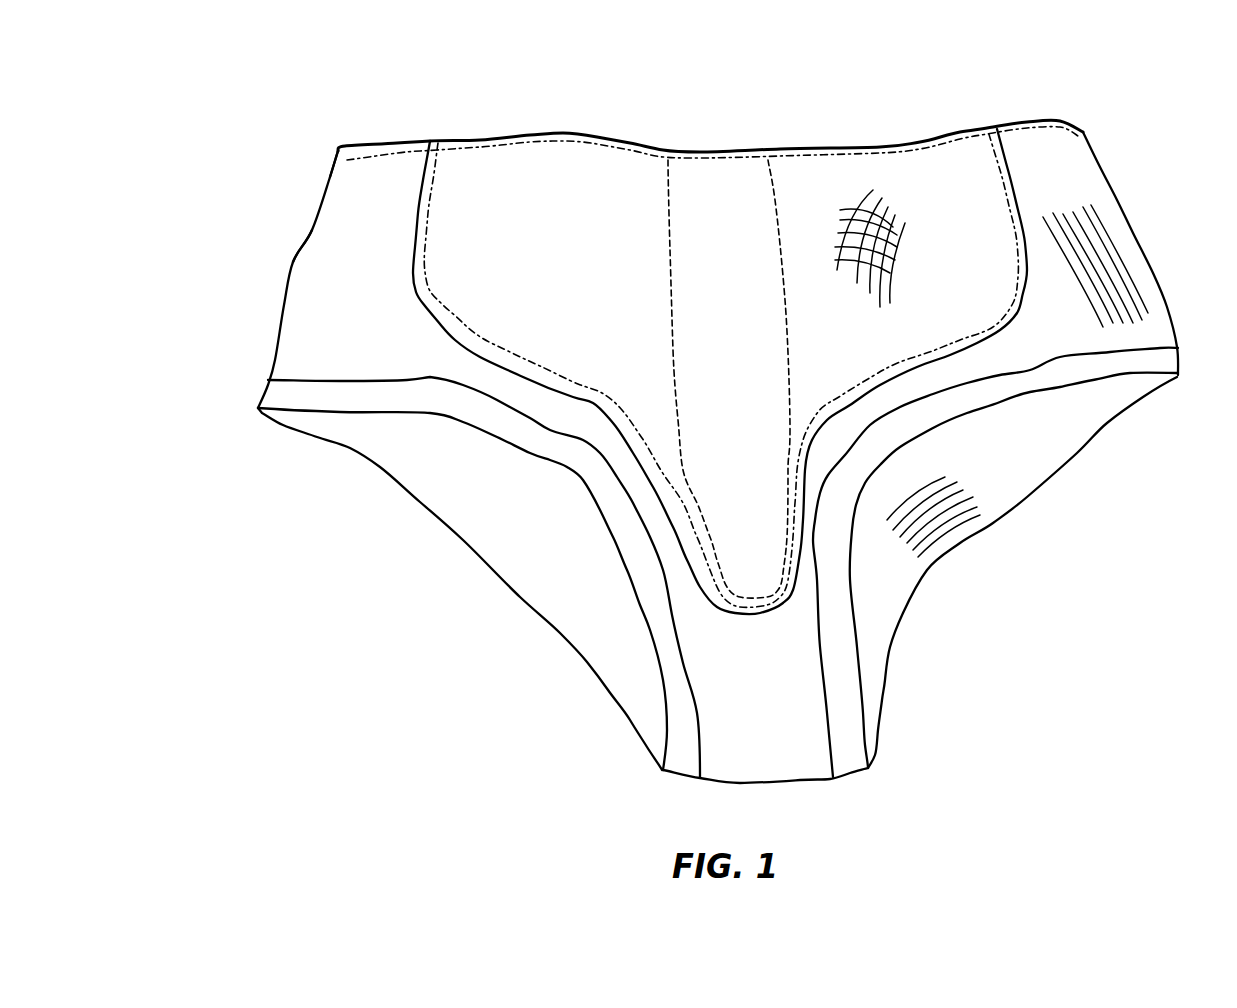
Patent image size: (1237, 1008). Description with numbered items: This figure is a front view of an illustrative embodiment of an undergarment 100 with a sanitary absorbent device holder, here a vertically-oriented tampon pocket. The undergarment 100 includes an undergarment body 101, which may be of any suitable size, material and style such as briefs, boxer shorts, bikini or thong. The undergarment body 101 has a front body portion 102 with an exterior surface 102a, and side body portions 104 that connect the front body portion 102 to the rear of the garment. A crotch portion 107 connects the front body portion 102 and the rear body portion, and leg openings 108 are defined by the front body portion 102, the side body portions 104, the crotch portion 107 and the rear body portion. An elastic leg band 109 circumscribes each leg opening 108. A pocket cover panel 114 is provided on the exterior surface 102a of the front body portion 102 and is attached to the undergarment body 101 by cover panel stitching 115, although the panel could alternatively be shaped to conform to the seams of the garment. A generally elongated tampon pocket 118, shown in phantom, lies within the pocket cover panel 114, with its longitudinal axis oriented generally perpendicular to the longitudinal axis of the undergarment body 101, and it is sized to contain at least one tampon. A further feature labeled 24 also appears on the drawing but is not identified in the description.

The undergarment 100 is at (515, 101).
The undergarment body 101 is at (1105, 181).
The front body portion 102 is at (358, 183).
The exterior surface 102a is at (388, 239).
The side body portions 104 is at (312, 228).
The pocket cover panel 114 is at (457, 290).
The cover panel stitching 115 is at (450, 323).
The tampon pocket 118 is at (693, 310).
The elastic leg band 109 is at (537, 438).
The gusset strip 24 is at (590, 503).
The leg openings 108 is at (635, 679).
The crotch portion 107 is at (807, 715).